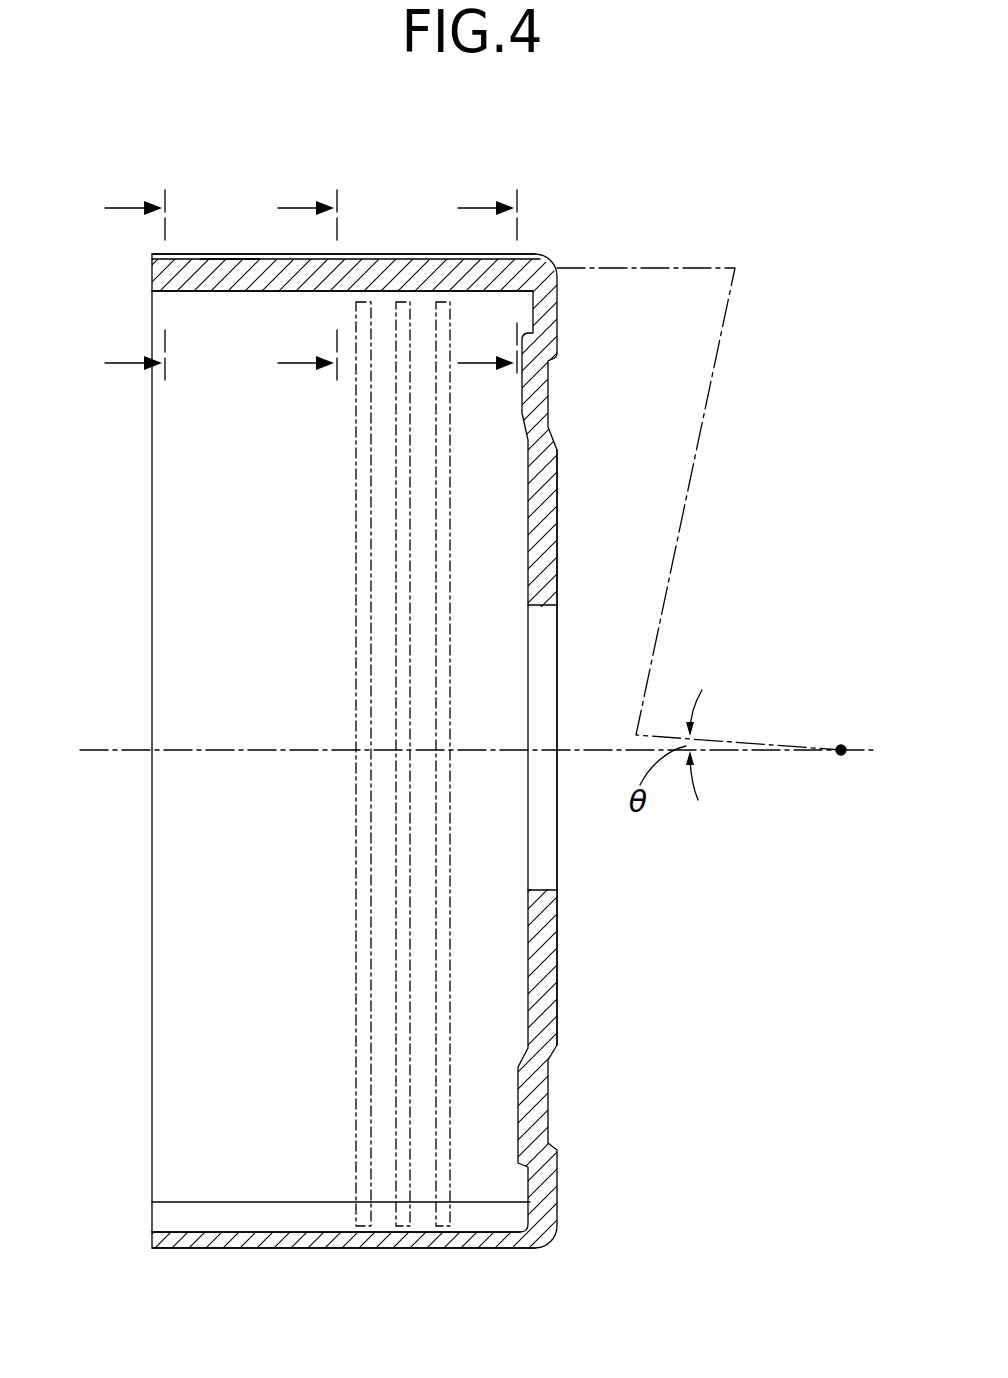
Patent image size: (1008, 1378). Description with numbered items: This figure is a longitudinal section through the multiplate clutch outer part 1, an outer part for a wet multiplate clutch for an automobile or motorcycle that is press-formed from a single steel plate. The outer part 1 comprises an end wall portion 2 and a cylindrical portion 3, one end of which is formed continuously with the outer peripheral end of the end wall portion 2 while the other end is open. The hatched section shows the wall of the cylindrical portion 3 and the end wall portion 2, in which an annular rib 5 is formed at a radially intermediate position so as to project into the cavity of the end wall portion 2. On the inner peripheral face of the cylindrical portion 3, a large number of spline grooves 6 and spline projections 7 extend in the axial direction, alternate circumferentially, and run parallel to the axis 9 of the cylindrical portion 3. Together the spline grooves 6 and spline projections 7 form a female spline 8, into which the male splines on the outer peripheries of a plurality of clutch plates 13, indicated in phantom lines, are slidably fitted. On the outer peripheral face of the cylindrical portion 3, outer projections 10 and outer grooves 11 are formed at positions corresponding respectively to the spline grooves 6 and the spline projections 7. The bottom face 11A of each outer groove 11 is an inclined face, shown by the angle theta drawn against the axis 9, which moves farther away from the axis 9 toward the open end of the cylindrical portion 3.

The multiplate clutch outer part 1 is at (548, 246).
The end wall portion 2 is at (561, 516).
The cylindrical portion 3 is at (360, 253).
The annular rib 5 is at (491, 472).
The spline grooves 6 is at (265, 1258).
The spline projections 7 is at (287, 1201).
The female spline 8 is at (197, 1196).
The axis 9 is at (490, 746).
The outer projections 10 is at (372, 1249).
The outer grooves 11 is at (209, 260).
The bottom face 11A is at (232, 262).
The clutch plates 13 is at (436, 630).